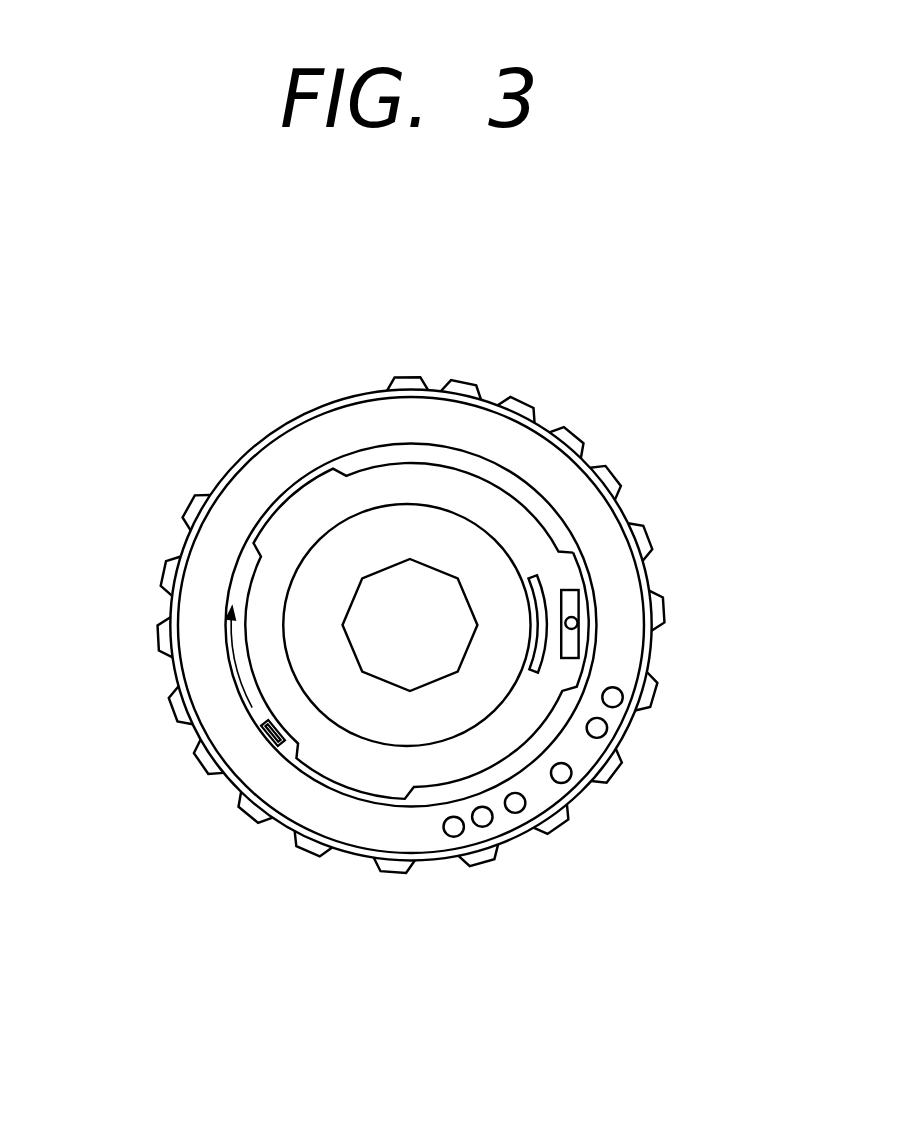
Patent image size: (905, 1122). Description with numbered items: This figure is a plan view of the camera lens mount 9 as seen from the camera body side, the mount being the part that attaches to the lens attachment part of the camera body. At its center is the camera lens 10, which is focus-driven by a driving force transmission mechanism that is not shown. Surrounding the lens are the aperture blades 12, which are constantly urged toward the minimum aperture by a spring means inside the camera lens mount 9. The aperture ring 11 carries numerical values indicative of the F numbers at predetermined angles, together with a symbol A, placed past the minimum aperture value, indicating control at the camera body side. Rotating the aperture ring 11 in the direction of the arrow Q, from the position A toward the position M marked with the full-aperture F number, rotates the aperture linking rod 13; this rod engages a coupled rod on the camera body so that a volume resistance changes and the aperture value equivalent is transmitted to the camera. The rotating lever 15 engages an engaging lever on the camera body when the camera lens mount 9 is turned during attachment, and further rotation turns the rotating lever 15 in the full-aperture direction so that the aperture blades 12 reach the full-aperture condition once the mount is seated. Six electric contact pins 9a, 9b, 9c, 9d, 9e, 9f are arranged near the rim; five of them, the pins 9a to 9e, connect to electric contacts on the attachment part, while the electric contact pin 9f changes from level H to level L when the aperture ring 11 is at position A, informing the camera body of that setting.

The camera lens mount 9 is at (388, 577).
The electric contact pin 9a is at (447, 836).
The electric contact pin 9b is at (481, 827).
The electric contact pin 9c is at (521, 812).
The electric contact pin 9d is at (569, 780).
The electric contact pin 9e is at (605, 731).
The electric contact pin 9f is at (619, 692).
The camera lens 10 is at (367, 613).
The aperture ring 11 is at (323, 405).
The aperture blades 12 is at (447, 553).
The aperture linking rod 13 is at (252, 738).
The rotating lever 15 is at (576, 623).
The arrow Q is at (243, 660).